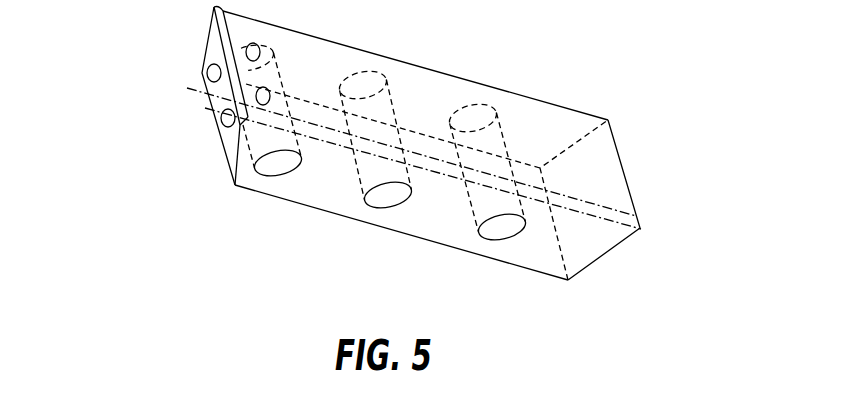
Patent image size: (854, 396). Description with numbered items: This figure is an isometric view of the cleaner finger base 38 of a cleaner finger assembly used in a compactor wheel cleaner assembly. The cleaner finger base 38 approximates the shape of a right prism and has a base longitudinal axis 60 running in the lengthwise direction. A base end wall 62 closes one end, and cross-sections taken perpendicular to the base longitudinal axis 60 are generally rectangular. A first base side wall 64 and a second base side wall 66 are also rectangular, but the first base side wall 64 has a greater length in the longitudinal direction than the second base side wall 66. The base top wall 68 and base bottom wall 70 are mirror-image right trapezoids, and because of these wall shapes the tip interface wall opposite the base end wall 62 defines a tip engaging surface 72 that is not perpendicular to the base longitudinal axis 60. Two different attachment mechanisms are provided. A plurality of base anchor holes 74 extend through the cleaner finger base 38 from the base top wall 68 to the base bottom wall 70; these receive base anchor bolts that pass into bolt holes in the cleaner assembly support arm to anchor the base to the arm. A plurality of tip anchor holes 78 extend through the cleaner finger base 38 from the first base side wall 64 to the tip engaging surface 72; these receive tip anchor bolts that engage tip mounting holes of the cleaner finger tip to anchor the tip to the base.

The cleaner finger base 38 is at (450, 57).
The base longitudinal axis 60 is at (647, 221).
The base end wall 62 is at (608, 163).
The first base side wall 64 is at (555, 123).
The second base side wall 66 is at (432, 217).
The base top wall 68 is at (317, 62).
The base bottom wall 70 is at (332, 190).
The tip engaging surface 72 is at (207, 38).
The base anchor holes 74 is at (278, 167).
The tip anchor holes 78 is at (222, 117).